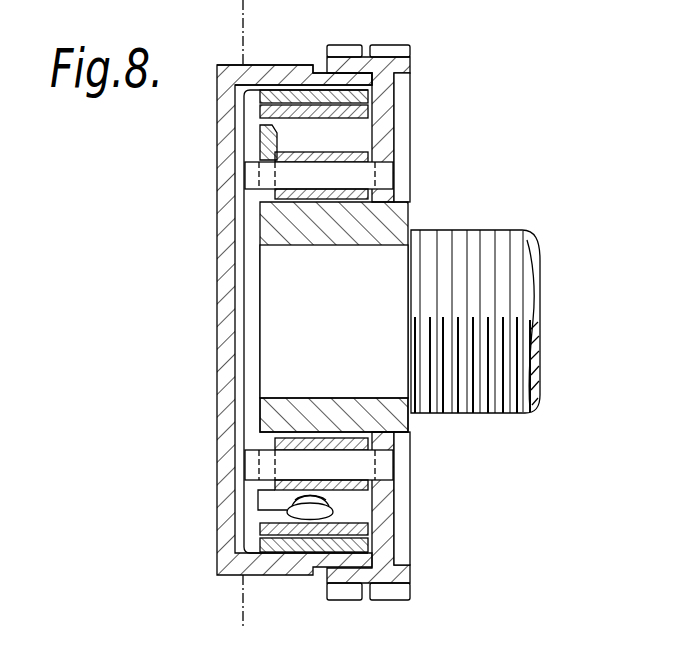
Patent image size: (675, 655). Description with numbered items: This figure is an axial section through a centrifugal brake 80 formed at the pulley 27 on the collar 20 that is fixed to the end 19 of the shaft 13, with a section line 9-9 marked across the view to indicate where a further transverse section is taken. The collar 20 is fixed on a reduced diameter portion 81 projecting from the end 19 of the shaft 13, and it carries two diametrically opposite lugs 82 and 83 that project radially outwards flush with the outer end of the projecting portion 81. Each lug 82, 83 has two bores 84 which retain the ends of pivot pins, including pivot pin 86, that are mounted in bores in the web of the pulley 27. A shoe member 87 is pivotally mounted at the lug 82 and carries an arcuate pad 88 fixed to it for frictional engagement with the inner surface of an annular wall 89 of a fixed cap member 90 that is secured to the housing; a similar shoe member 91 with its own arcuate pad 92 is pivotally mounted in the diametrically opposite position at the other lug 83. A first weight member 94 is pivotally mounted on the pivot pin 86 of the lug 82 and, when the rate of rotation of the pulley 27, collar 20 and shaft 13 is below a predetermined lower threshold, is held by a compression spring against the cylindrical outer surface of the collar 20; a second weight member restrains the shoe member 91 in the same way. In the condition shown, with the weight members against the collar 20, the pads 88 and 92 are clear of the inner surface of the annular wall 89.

The section line 9- 9 is at (258, 9).
The shaft 13 is at (537, 307).
The end of the shaft 19 is at (412, 265).
The collar 20 is at (388, 422).
The pulley 27 is at (412, 64).
The centrifugal brake 80 is at (259, 296).
The reduced diameter portion 81 is at (341, 340).
The lug 82 is at (262, 133).
The lug 83 is at (275, 437).
The bores 84 is at (262, 152).
The pivot pin 86 is at (390, 177).
The shoe member 87 is at (362, 112).
The arcuate pad 88 is at (365, 102).
The annular wall 89 is at (282, 72).
The fixed cap member 90 is at (222, 272).
The shoe member 91 is at (367, 528).
The arcuate pad 92 is at (363, 547).
The first weight member 94 is at (262, 206).